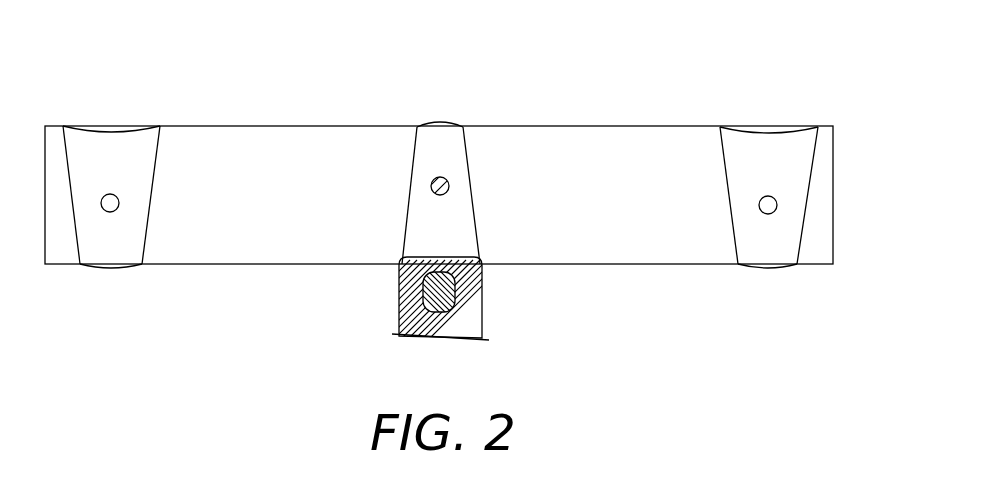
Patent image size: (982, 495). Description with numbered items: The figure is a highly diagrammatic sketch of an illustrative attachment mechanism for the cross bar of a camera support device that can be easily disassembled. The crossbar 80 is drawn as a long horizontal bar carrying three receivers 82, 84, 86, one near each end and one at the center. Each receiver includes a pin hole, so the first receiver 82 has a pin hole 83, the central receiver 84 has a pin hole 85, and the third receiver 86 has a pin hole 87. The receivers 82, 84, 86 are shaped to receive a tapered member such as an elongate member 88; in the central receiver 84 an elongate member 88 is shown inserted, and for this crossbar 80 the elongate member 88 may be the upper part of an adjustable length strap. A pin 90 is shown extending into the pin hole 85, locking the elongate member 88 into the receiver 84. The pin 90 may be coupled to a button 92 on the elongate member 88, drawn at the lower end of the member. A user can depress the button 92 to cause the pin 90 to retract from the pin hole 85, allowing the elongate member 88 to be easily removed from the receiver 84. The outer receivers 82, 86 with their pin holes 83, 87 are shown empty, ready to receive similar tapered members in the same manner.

The crossbar 80 is at (638, 78).
The receiver 82 is at (115, 247).
The pin hole 83 is at (110, 194).
The receiver 84 is at (437, 123).
The pin hole 85 is at (437, 177).
The pin 90 is at (443, 177).
The elongate member 88 is at (475, 338).
The button 92 is at (435, 313).
The receiver 86 is at (772, 248).
The pin hole 87 is at (768, 196).